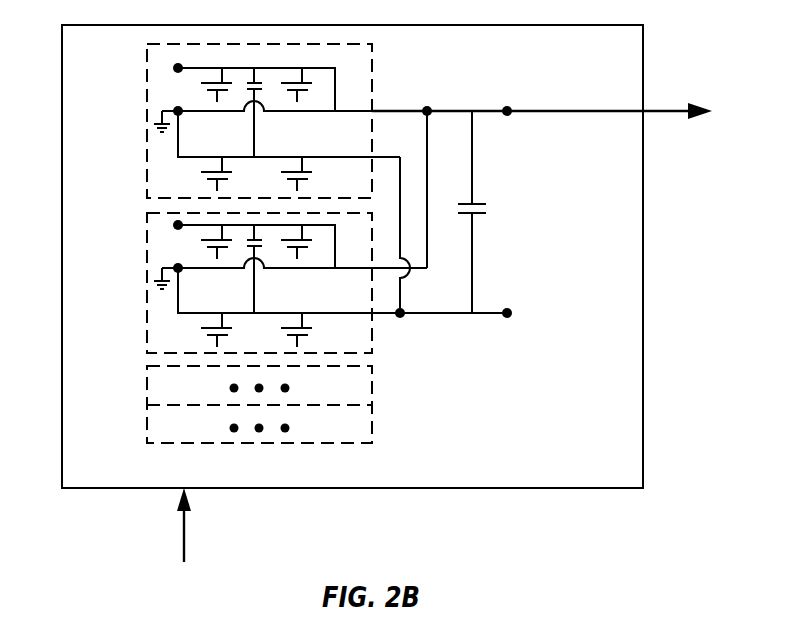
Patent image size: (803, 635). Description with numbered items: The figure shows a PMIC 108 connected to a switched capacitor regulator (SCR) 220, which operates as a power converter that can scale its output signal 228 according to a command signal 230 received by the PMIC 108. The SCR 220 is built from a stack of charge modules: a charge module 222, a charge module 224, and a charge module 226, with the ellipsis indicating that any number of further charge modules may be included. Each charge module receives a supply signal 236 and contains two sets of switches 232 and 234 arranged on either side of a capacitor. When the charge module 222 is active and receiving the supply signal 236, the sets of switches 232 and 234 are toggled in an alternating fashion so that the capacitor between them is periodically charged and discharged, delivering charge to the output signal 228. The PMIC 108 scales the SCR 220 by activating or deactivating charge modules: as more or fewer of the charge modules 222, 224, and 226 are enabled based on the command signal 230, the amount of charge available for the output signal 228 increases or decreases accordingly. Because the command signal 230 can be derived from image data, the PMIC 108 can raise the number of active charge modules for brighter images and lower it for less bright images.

The PMIC 108 is at (547, 449).
The switched capacitor regulator 220 is at (508, 75).
The charge module 222 is at (243, 121).
The charge module 224 is at (146, 268).
The charge module 226 is at (148, 385).
The output signal 228 is at (682, 115).
The command signal 230 is at (186, 525).
The set of switches 232 is at (221, 104).
The set of switches 234 is at (301, 104).
The supply signal 236 is at (175, 65).